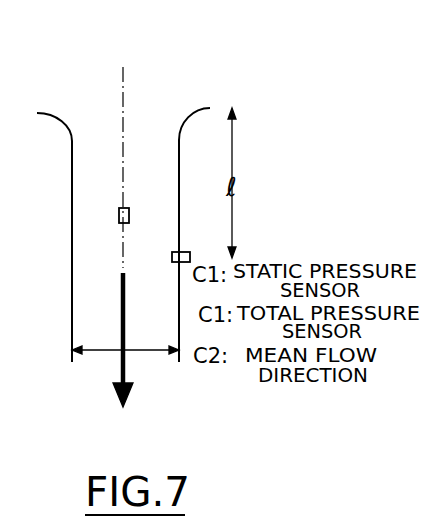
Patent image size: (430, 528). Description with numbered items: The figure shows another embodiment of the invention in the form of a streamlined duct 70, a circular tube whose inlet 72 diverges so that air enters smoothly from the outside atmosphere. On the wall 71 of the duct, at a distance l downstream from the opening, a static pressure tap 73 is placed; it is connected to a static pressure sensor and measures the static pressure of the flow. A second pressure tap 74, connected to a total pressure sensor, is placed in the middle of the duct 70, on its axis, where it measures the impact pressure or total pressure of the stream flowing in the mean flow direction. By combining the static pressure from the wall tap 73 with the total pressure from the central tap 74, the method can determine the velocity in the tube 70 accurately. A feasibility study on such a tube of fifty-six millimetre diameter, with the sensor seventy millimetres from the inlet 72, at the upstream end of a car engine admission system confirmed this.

The streamlined duct 70 is at (60, 295).
The wall 71 is at (75, 241).
The inlet 72 is at (62, 112).
The static pressure tap 73 is at (183, 252).
The second pressure tap 74 is at (125, 208).